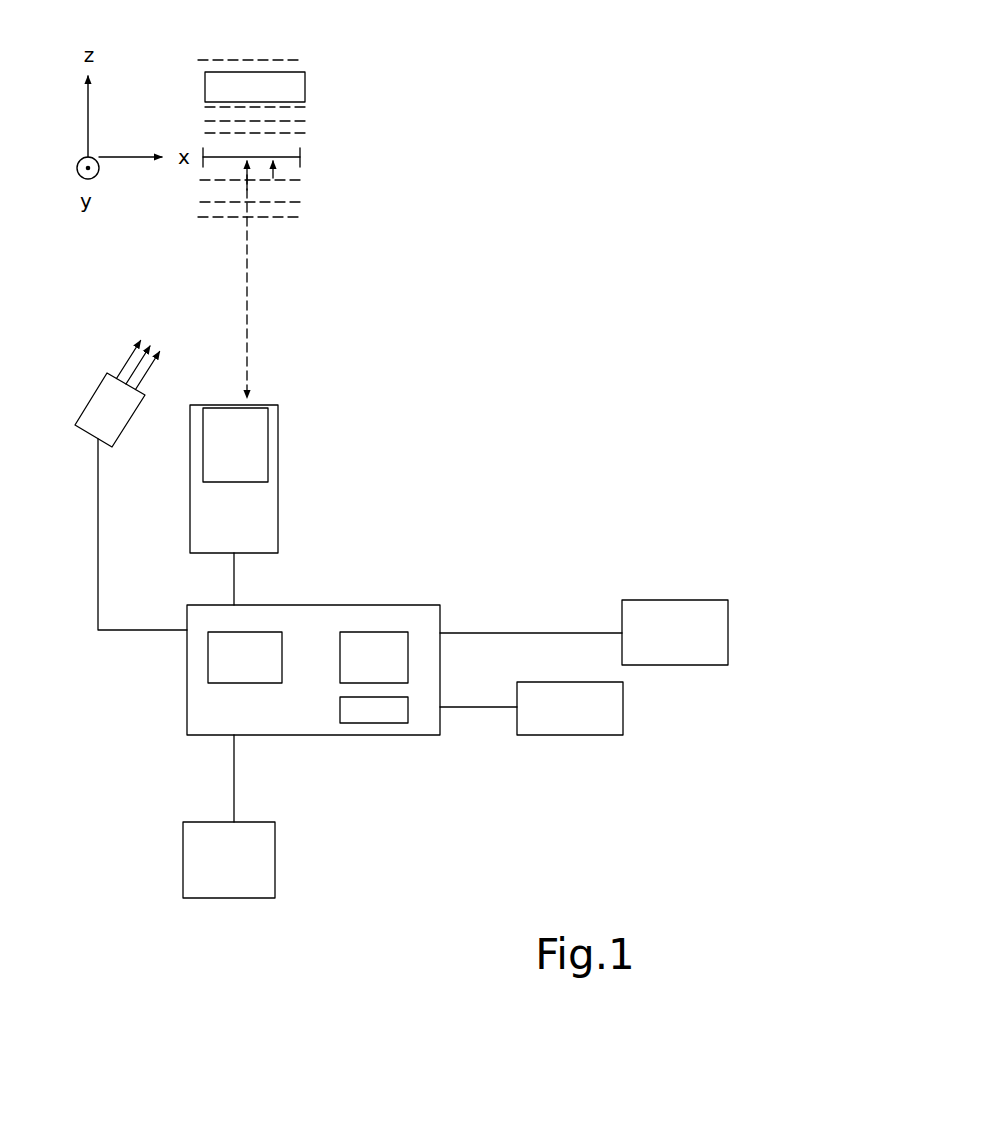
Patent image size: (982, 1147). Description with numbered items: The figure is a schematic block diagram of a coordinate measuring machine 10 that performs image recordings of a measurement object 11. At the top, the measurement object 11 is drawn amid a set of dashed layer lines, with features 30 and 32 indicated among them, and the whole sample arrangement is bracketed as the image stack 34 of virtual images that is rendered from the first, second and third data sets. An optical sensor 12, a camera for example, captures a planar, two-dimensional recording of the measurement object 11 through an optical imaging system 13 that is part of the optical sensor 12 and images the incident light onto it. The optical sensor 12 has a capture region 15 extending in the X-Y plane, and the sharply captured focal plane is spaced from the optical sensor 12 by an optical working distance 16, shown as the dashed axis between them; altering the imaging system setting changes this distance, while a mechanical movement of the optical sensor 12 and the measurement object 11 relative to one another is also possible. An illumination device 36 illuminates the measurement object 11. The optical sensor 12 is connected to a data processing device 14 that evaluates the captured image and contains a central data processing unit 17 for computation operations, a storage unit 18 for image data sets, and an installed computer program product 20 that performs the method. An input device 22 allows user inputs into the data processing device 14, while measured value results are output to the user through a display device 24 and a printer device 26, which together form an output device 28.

The coordinate measuring machine 10 is at (598, 377).
The measurement object 11 is at (291, 83).
The optical sensor 12 is at (300, 488).
The optical imaging system 13 is at (245, 448).
The data processing device 14 is at (356, 690).
The capture region 15 is at (305, 158).
The optical working distance 16 is at (245, 302).
The central data processing unit 17 is at (227, 667).
The storage unit 18 is at (398, 640).
The computer program product 20 is at (380, 708).
The input device 22 is at (227, 872).
The display device 24 is at (688, 612).
The printer device 26 is at (578, 720).
The output device 28 is at (699, 678).
The measuring points 30 is at (273, 178).
The sample layers 32 is at (311, 124).
The image stack 34 is at (415, 110).
The illumination device 36 is at (107, 422).